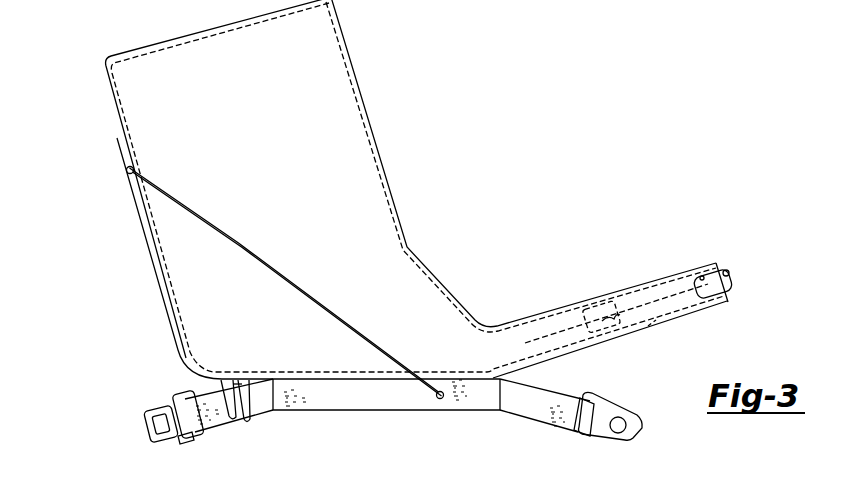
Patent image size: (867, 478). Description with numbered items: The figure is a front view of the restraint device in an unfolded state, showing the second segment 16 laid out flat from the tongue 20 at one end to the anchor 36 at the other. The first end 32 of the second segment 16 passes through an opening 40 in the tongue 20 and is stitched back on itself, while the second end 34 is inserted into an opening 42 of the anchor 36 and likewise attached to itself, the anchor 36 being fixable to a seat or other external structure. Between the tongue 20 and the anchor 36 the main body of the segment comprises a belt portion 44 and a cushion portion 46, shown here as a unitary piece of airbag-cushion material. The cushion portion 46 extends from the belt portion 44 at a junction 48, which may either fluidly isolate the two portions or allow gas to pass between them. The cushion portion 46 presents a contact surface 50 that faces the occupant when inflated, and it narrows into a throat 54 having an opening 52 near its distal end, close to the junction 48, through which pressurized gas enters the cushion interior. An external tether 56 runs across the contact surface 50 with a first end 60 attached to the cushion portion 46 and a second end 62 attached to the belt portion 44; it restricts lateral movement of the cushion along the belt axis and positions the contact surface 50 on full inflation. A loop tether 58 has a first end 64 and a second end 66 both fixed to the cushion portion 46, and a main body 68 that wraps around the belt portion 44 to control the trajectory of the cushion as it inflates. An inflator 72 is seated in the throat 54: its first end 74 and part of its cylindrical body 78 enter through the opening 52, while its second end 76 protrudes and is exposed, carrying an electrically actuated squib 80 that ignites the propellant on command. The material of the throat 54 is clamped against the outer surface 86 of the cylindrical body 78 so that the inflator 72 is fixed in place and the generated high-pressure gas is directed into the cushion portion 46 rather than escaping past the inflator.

The second segment 16 is at (150, 382).
The tongue 20 is at (150, 428).
The first end 32 is at (172, 400).
The second end 34 is at (600, 405).
The anchor 36 is at (632, 440).
The opening 40 is at (185, 440).
The opening 42 is at (575, 430).
The belt portion 44 is at (382, 414).
The cushion portion 46 is at (374, 139).
The junction 48 is at (444, 378).
The contact surface 50 is at (198, 84).
The opening 52 is at (712, 302).
The throat 54 is at (522, 340).
The external tether 56 is at (258, 258).
The loop tether 58 is at (246, 400).
The first end 60 is at (126, 170).
The second end 62 is at (440, 400).
The first end 64 is at (246, 381).
The second end 66 is at (226, 381).
The main body 68 is at (239, 423).
The inflator 72 is at (701, 277).
The first end 74 is at (578, 322).
The second end 76 is at (733, 292).
The cylindrical body 78 is at (652, 330).
The squib 80 is at (727, 272).
The outer surface 86 is at (606, 302).